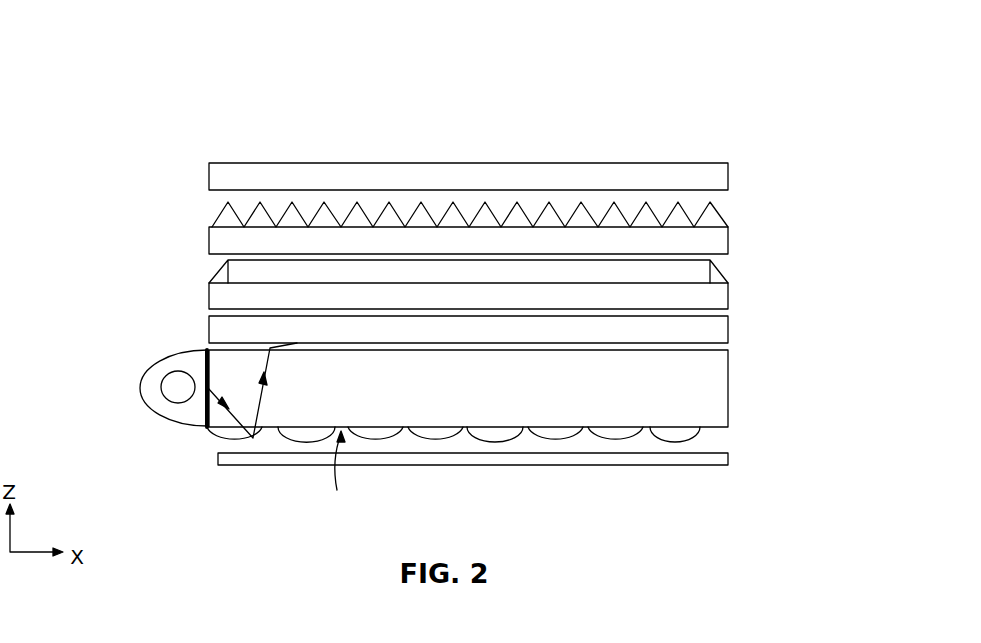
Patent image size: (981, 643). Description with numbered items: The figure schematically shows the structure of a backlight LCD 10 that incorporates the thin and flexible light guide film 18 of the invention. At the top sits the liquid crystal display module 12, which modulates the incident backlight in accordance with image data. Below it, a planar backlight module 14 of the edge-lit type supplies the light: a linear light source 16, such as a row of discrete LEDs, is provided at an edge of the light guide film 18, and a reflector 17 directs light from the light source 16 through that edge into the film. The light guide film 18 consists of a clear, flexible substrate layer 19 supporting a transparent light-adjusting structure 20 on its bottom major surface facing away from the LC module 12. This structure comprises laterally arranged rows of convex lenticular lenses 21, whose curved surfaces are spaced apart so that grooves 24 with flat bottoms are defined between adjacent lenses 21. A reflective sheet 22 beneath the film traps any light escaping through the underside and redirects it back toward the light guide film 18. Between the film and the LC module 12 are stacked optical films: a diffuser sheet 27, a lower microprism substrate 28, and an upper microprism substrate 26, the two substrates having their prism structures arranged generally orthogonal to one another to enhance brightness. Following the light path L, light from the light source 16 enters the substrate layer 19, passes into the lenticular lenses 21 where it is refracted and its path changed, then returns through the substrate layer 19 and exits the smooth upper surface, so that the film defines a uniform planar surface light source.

The backlight LCD 10 is at (681, 136).
The liquid crystal display module 12 is at (722, 177).
The backlight module 14 is at (120, 203).
The linear light source 16 is at (175, 383).
The reflector 17 is at (153, 415).
The light guide film 18 is at (770, 437).
The substrate layer 19 is at (713, 366).
The light-adjusting structure 20 is at (205, 435).
The lenticular lenses 21 is at (440, 438).
The reflective sheet 22 is at (218, 458).
The grooves 24 is at (337, 477).
The upper microprism substrate 26 is at (723, 240).
The diffuser sheet 27 is at (725, 330).
The lower microprism substrate 28 is at (724, 295).
The light path L is at (259, 393).